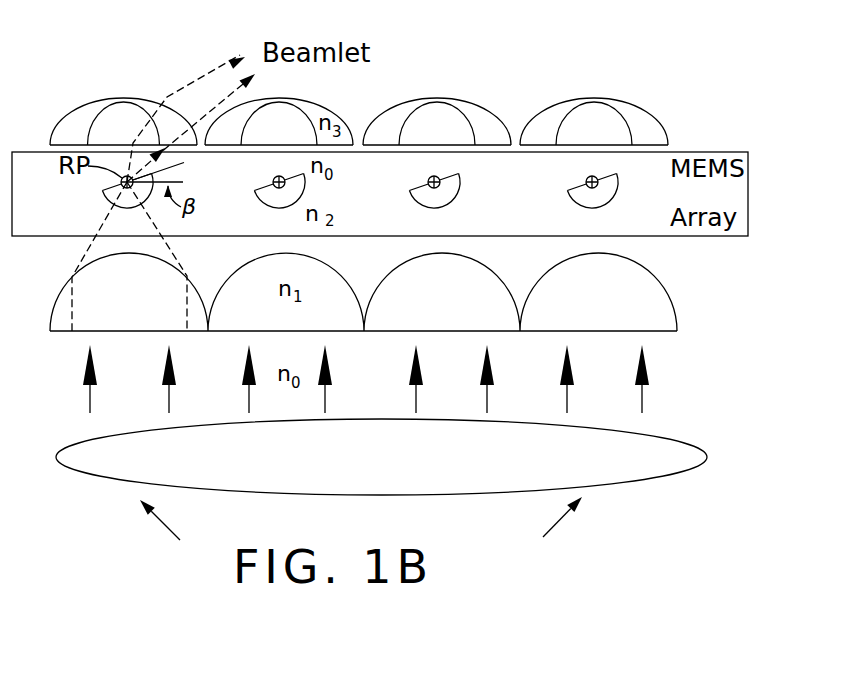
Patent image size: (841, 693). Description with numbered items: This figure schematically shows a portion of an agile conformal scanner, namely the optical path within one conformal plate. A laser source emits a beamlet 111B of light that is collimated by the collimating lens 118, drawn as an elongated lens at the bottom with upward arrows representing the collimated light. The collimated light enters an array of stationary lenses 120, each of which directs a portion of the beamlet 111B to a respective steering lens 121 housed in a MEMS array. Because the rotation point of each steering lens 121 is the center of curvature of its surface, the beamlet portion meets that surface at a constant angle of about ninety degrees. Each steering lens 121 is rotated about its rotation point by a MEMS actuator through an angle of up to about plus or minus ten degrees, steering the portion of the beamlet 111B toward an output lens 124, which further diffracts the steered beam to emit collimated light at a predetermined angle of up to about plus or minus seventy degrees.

The output lens 124 is at (627, 102).
The steering lens 121 is at (108, 198).
The stationary lens 120 is at (665, 280).
The collimating lens 118 is at (670, 438).
The beamlet 111B is at (552, 527).